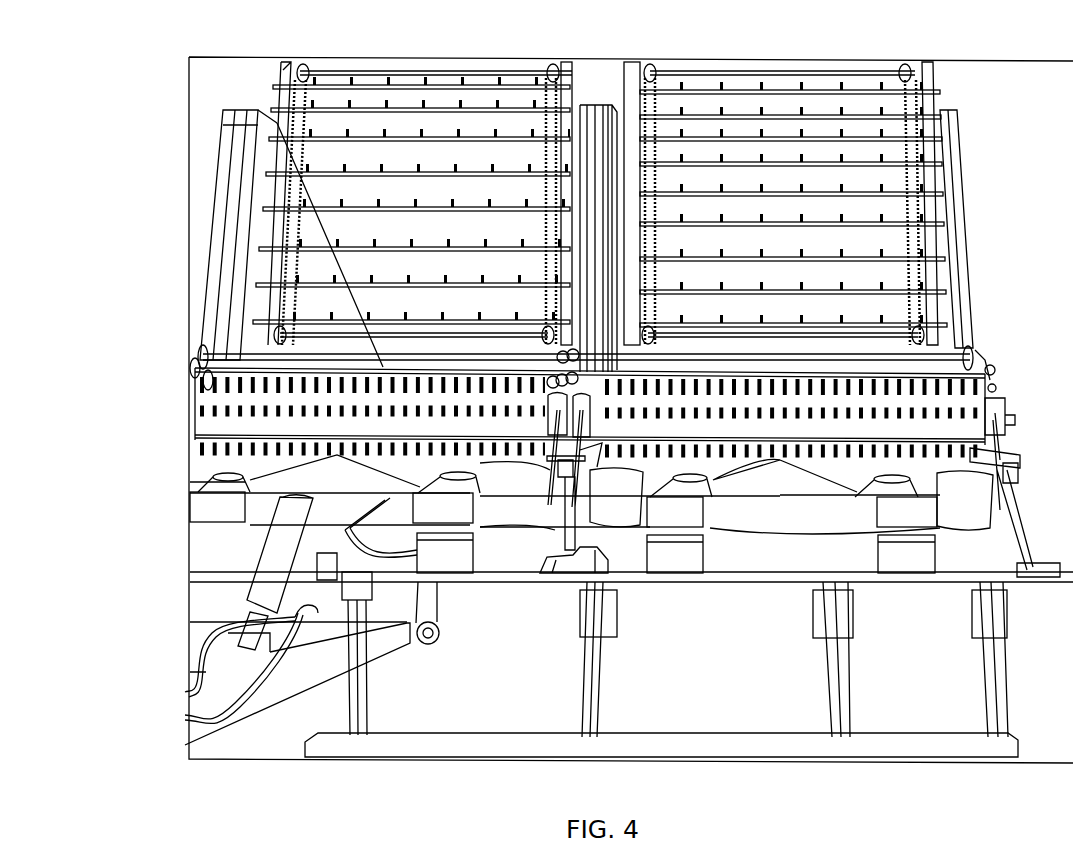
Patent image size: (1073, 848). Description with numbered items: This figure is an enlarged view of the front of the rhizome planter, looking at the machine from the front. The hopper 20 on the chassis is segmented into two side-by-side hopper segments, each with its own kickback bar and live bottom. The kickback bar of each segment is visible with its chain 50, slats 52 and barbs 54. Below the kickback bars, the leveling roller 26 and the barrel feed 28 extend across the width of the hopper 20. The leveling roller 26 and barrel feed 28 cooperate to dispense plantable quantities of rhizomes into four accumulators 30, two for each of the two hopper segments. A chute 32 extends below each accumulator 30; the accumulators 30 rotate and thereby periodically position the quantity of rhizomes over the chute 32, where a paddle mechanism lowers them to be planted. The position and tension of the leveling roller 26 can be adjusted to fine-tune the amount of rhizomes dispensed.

The hopper 20 is at (258, 188).
The leveling roller 26 is at (948, 380).
The barrel feed 28 is at (634, 238).
The accumulator 30 is at (230, 478).
The chute 32 is at (437, 557).
The chain 50 is at (652, 80).
The slats 52 is at (843, 150).
The barbs 54 is at (780, 77).